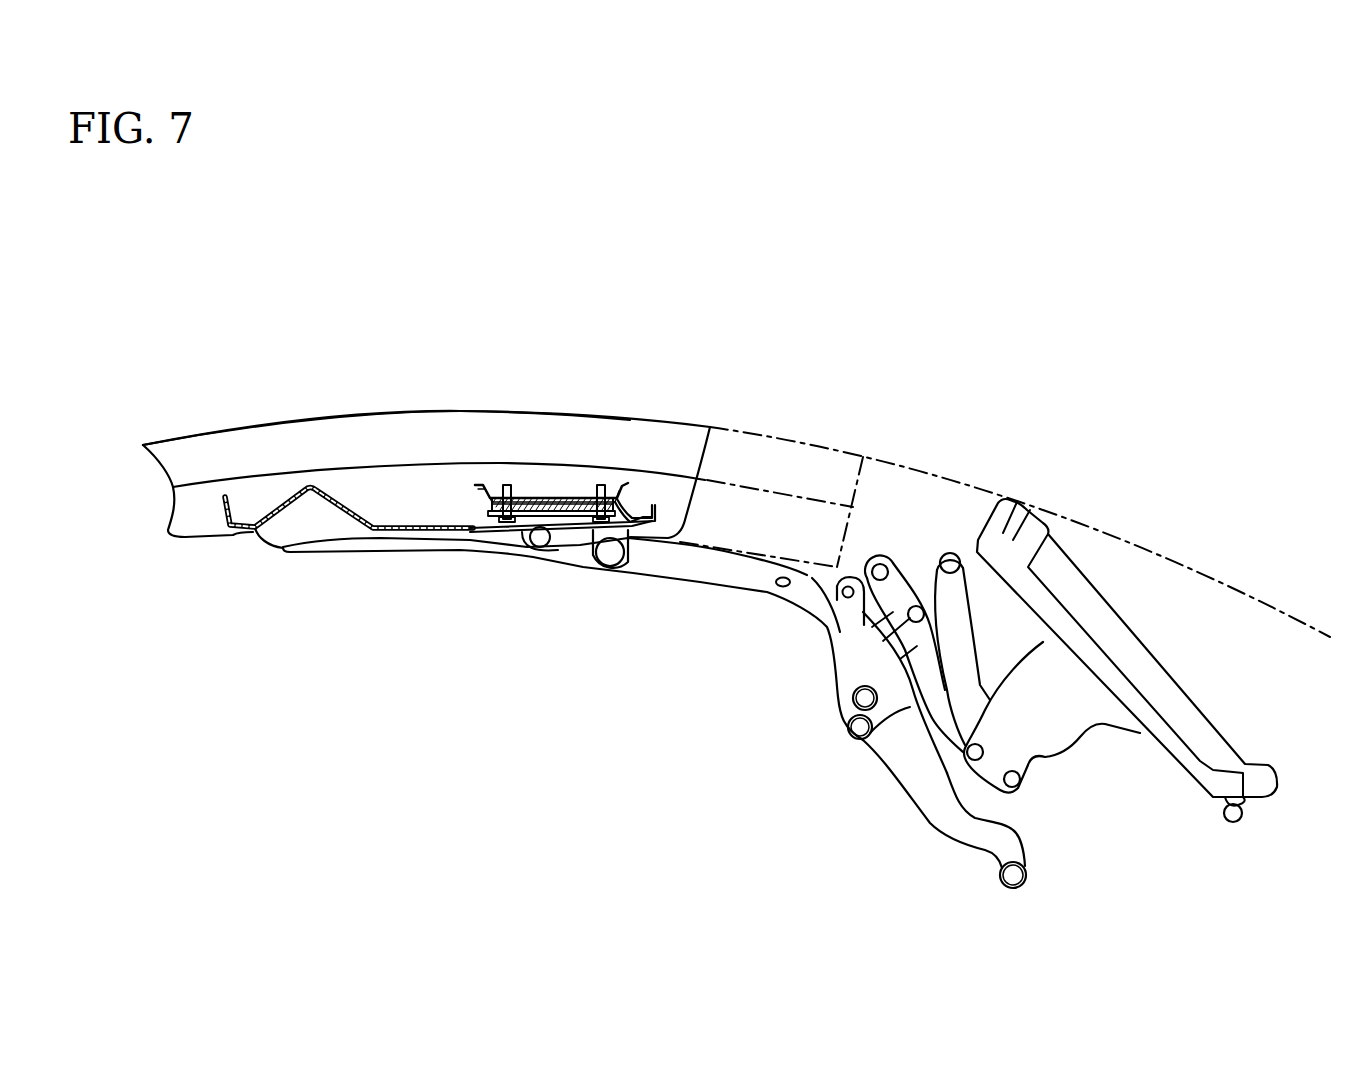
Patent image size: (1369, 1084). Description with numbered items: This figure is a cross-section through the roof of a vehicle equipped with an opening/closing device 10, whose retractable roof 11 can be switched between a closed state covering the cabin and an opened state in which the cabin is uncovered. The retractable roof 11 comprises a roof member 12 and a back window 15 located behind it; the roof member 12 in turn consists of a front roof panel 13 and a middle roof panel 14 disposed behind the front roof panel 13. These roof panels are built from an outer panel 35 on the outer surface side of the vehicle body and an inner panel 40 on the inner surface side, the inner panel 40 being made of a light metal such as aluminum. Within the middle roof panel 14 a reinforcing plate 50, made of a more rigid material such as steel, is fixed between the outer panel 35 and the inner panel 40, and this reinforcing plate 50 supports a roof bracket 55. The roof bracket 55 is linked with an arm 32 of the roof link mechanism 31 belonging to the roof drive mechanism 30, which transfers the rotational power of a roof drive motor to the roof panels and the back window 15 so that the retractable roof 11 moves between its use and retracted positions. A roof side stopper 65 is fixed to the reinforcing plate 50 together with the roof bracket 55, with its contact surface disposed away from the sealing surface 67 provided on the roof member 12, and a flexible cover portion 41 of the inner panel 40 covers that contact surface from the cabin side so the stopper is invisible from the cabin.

The opening/closing device 10 is at (978, 345).
The retractable roof 11 is at (563, 410).
The roof member 12 is at (367, 416).
The front roof panel 13 is at (280, 424).
The middle roof panel 14 is at (820, 440).
The back window 15 is at (1153, 640).
The roof drive mechanism 30 is at (898, 790).
The roof link mechanism 31 is at (796, 615).
The arm 32 is at (662, 577).
The outer panel 35 is at (452, 426).
The inner panel 40 is at (347, 522).
The cover portion 41 is at (645, 518).
The reinforcing plate 50 is at (477, 483).
The roof bracket 55 is at (475, 520).
The roof side stopper 65 is at (627, 497).
The sealing surface 67 is at (703, 431).